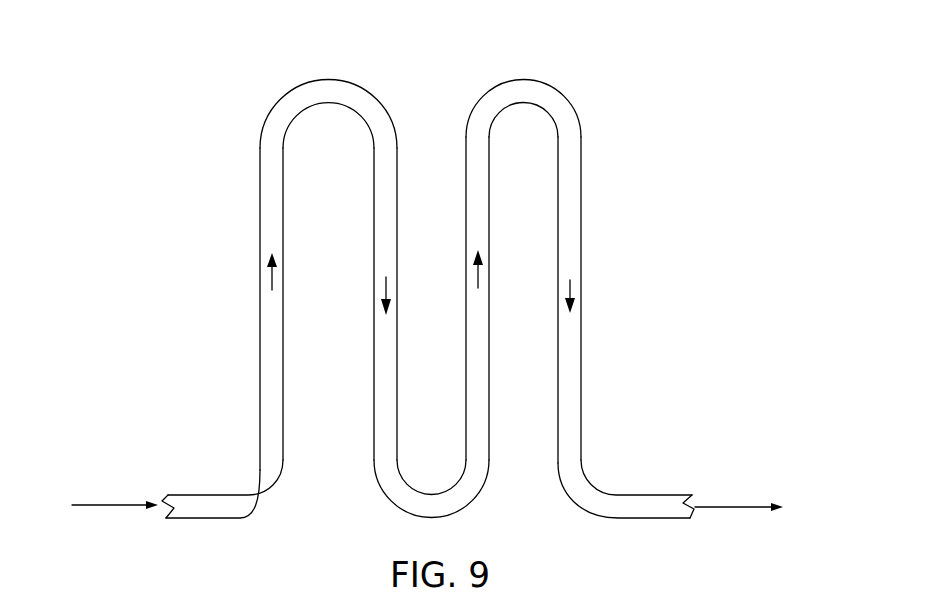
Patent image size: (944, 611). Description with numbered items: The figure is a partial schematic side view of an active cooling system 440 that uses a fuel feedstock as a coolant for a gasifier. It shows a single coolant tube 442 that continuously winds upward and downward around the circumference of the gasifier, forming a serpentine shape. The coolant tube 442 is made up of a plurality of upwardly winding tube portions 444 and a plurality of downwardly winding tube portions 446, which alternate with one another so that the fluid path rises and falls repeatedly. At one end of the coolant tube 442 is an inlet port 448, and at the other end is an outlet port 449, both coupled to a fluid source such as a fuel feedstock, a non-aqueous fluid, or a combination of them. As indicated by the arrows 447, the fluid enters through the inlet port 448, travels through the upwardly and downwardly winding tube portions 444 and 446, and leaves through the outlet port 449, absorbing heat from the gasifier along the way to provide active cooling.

The active cooling system 440 is at (601, 33).
The coolant tube 442 is at (581, 132).
The upwardly winding tube portions 444 is at (260, 132).
The downwardly winding tube portions 446 is at (396, 132).
The arrows 447 is at (270, 279).
The inlet port 448 is at (182, 495).
The outlet port 449 is at (664, 494).